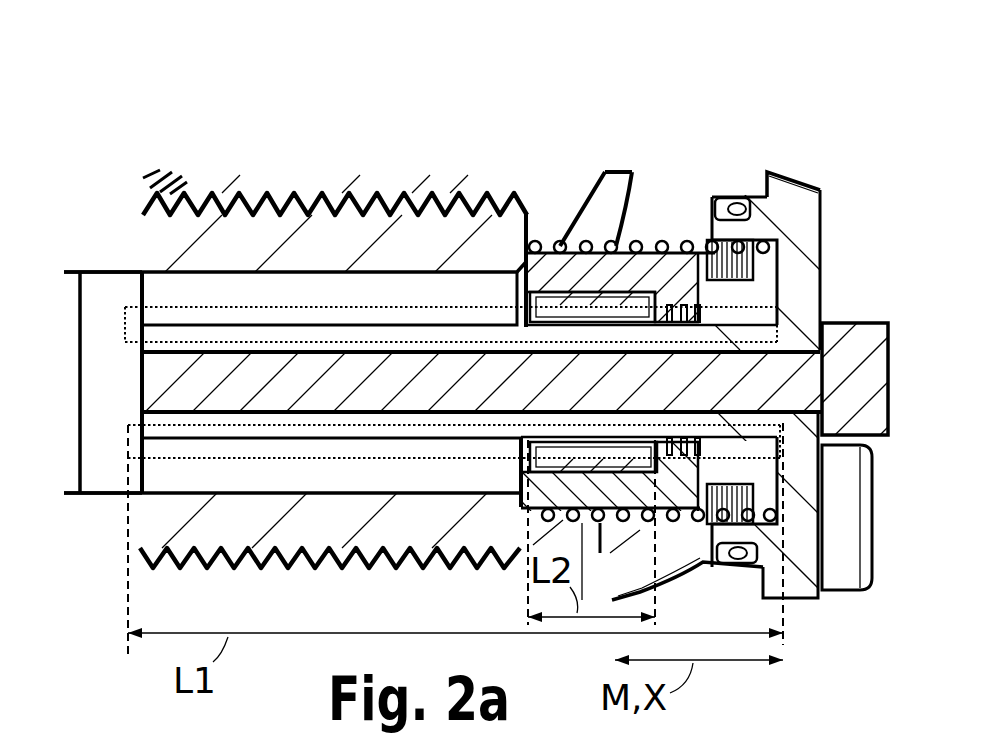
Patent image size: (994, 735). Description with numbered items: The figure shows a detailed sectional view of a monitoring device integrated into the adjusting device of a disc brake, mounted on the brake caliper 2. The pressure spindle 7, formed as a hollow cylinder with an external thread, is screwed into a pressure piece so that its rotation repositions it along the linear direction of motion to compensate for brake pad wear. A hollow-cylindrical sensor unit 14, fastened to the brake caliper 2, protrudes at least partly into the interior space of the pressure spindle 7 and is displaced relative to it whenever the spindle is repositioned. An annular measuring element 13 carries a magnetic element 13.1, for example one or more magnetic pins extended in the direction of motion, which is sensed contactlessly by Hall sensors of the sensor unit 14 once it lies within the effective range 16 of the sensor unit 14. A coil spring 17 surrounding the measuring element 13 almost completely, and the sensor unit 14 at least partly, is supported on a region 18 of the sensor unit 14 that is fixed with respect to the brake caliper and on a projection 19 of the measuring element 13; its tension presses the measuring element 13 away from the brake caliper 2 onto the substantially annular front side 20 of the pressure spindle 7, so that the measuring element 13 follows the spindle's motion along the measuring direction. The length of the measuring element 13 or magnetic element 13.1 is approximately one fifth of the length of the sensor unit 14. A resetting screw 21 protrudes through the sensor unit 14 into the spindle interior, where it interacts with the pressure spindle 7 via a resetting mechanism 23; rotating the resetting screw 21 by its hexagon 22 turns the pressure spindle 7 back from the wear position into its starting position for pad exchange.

The brake caliper 2 is at (695, 203).
The pressure spindle 7 is at (375, 232).
The measuring element 13 is at (610, 268).
The magnetic element 13.1 is at (573, 305).
The sensor unit 14 is at (300, 332).
The effective range 16 is at (133, 330).
The coil spring 17 is at (662, 238).
The region of the sensor unit 18 is at (797, 236).
The projection 19 is at (543, 238).
The annular front side 20 is at (517, 250).
The resetting screw 21 is at (208, 358).
The hexagon 22 is at (852, 322).
The resetting mechanism 23 is at (98, 293).